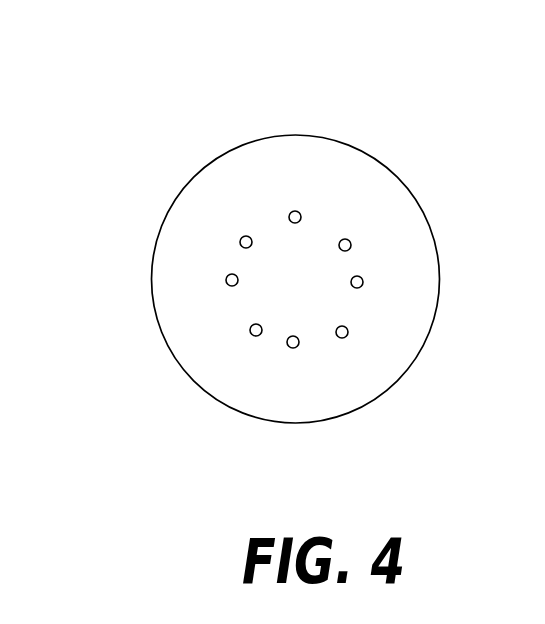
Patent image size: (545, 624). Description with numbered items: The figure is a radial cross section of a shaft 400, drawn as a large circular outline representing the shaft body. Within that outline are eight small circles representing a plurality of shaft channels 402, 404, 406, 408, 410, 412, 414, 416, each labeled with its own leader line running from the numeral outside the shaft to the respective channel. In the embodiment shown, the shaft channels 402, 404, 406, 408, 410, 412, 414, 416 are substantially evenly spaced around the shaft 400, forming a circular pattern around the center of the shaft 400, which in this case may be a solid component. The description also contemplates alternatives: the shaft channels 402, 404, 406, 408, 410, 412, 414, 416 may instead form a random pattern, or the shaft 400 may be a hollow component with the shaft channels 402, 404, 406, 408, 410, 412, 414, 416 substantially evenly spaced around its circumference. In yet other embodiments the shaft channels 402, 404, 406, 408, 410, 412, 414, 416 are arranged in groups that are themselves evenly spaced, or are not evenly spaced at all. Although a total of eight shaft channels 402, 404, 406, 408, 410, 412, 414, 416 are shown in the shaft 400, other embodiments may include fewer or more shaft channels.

The shaft 400 is at (413, 84).
The shaft channel 402 is at (301, 213).
The shaft channel 404 is at (351, 243).
The shaft channel 406 is at (363, 285).
The shaft channel 408 is at (346, 338).
The shaft channel 410 is at (287, 346).
The shaft channel 412 is at (250, 334).
The shaft channel 414 is at (226, 280).
The shaft channel 416 is at (240, 238).